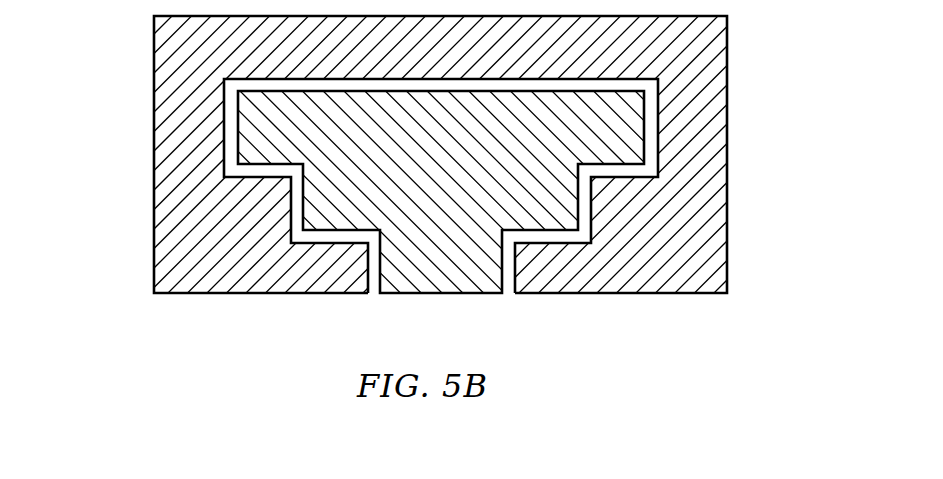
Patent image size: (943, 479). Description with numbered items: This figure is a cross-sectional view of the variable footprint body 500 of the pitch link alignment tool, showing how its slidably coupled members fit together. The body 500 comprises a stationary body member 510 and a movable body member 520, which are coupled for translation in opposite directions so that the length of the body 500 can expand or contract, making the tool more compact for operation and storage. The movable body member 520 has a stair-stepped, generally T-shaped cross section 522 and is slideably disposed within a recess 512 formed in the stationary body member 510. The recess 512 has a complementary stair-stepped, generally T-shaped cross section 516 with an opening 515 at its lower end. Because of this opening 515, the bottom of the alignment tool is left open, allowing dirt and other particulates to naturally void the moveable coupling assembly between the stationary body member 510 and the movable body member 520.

The body 500 is at (108, 170).
The stationary body member 510 is at (712, 65).
The recess 512 is at (451, 207).
The stair-stepped, generally T-shaped cross section 516 is at (507, 268).
The opening 515 is at (509, 293).
The movable body member 520 is at (445, 214).
The stair-stepped, generally T-shaped cross section 522 is at (445, 265).